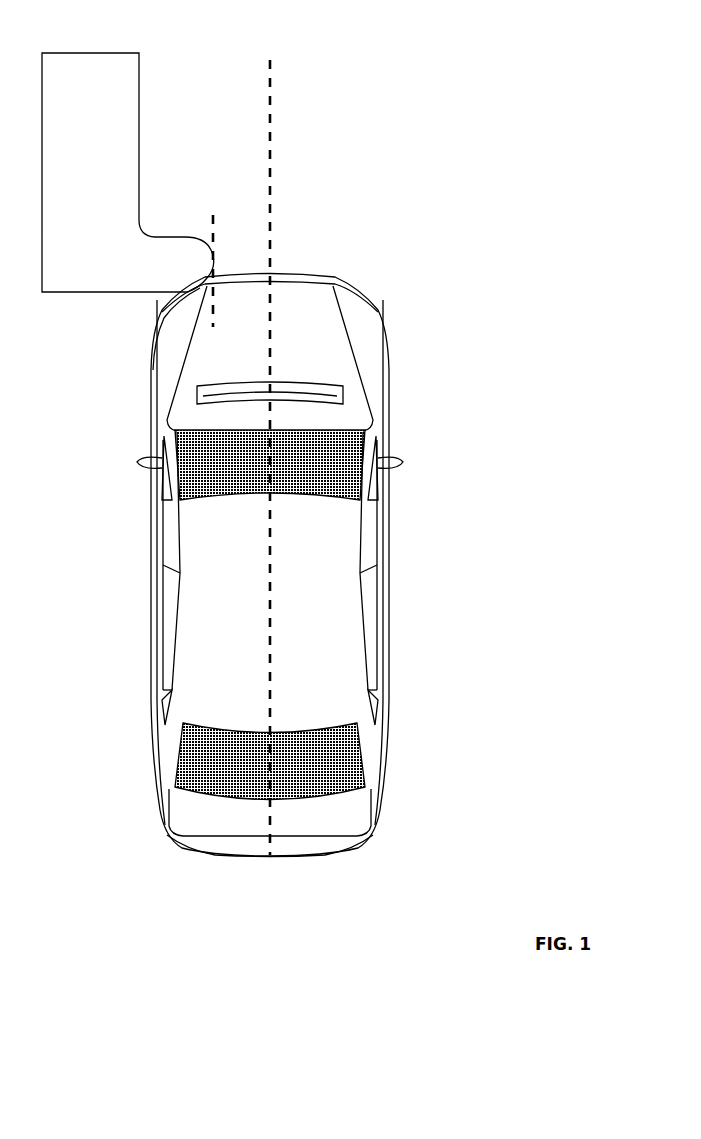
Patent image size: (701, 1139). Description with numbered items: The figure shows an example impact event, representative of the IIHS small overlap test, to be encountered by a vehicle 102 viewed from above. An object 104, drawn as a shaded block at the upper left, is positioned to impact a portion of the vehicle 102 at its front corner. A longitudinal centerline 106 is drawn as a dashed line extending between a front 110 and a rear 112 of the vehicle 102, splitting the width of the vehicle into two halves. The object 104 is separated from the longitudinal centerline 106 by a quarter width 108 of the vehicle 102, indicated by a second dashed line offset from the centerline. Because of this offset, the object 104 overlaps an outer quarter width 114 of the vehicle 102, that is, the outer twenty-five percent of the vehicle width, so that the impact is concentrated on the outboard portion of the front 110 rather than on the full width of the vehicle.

The vehicle 102 is at (258, 572).
The object 104 is at (68, 53).
The longitudinal centerline 106 is at (270, 133).
The quarter width 108 is at (256, 217).
The front 110 is at (333, 276).
The rear 112 is at (221, 860).
The outer quarter width 114 is at (181, 317).